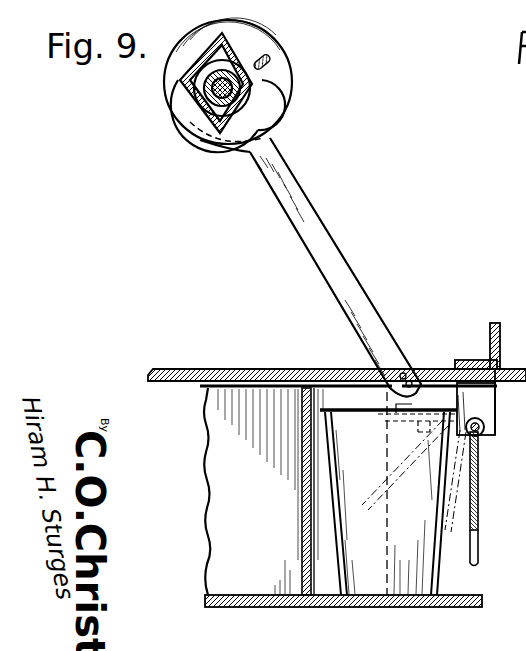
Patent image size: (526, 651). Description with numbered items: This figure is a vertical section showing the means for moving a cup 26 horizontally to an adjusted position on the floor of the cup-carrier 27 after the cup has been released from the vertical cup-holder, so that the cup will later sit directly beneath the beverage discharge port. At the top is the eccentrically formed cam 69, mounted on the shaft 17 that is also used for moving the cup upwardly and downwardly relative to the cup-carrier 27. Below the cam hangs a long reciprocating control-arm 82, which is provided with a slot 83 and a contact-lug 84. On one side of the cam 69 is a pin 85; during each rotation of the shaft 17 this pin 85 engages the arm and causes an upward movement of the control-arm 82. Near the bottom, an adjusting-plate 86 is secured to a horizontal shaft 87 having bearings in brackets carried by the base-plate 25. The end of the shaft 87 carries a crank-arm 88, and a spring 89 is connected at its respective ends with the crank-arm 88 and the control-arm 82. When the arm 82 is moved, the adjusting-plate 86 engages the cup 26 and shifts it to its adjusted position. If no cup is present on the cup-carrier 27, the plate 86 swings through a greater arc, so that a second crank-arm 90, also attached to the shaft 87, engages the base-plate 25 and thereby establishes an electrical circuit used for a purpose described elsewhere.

The shaft 17 is at (205, 97).
The base-plate 25 is at (221, 368).
The cup 26 is at (372, 596).
The cup-carrier 27 is at (222, 502).
The cam 69 is at (288, 96).
The control-arm 82 is at (316, 227).
The slot 83 is at (237, 125).
The contact-lug 84 is at (192, 68).
The pin 85 is at (270, 58).
The adjusting-plate 86 is at (398, 490).
The horizontal shaft 87 is at (480, 436).
The crank-arm 88 is at (422, 434).
The spring 89 is at (395, 412).
The crank-arm 90 is at (449, 364).